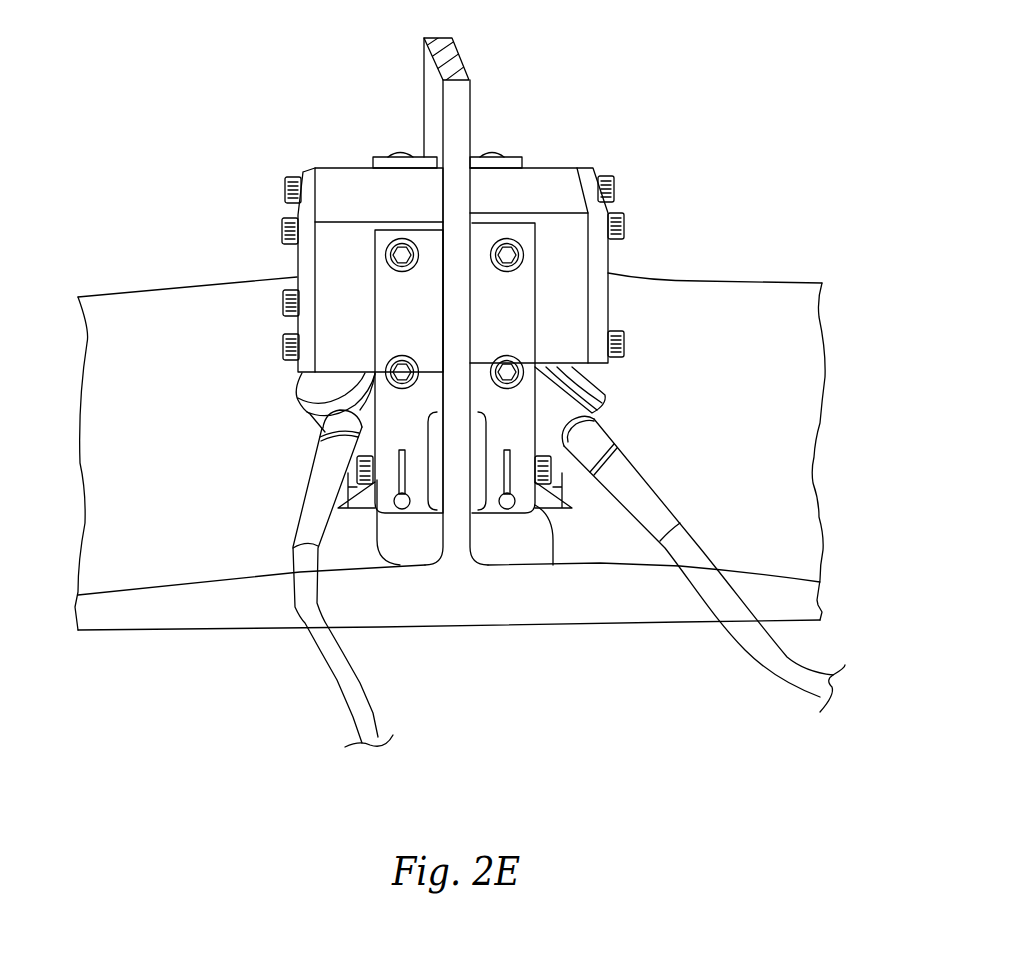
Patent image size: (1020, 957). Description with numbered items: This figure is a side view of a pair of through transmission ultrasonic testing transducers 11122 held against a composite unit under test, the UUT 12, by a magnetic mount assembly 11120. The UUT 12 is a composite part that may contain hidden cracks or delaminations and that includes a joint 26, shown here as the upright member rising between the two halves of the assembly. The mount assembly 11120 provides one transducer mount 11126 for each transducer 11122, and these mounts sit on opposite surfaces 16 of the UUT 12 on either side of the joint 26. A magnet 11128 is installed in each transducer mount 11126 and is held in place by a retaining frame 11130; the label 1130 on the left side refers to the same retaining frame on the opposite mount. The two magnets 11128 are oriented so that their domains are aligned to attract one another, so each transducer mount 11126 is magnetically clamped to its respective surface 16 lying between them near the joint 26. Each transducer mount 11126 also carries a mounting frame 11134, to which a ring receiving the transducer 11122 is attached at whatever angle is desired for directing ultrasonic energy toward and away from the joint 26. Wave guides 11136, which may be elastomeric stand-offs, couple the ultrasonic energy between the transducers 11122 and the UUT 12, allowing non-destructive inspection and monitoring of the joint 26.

The UUT 12 is at (176, 487).
The surfaces 16 is at (430, 95).
The joint 26 is at (453, 588).
The mount assembly 11120 is at (642, 84).
The through transmission UT transducers 11122 is at (280, 394).
The transducer mount 11126 is at (252, 205).
The magnet 11128 is at (330, 258).
The clamp plate 1130 is at (312, 178).
The retaining frame 11130 is at (588, 173).
The mounting frame 11134 is at (385, 505).
The wave guides 11136 is at (360, 500).